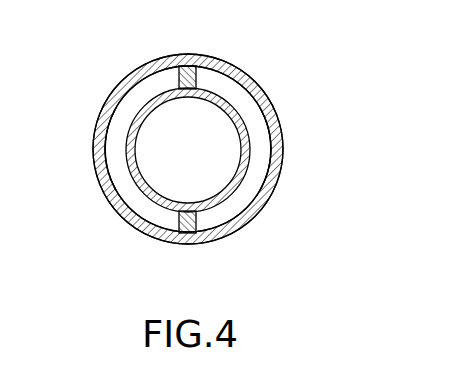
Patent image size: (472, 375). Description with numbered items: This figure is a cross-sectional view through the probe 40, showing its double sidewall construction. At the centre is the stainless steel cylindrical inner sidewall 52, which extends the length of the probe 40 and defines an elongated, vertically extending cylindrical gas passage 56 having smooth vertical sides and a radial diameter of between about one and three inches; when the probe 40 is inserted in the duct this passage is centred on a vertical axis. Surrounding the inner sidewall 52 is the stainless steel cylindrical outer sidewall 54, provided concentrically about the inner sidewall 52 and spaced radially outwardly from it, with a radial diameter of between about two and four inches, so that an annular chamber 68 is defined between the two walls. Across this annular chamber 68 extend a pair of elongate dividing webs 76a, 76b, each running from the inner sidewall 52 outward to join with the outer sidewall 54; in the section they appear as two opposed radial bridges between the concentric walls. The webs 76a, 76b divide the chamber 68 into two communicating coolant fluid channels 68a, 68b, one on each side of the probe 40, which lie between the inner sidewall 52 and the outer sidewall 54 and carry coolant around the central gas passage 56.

The probe 40 is at (306, 161).
The inner sidewall 52 is at (138, 115).
The outer sidewall 54 is at (232, 229).
The gas passage 56 is at (118, 200).
The annular chamber 68 is at (97, 132).
The coolant fluid channel 68a is at (113, 158).
The coolant fluid channel 68b is at (244, 108).
The dividing web 76a is at (197, 80).
The dividing web 76b is at (178, 220).